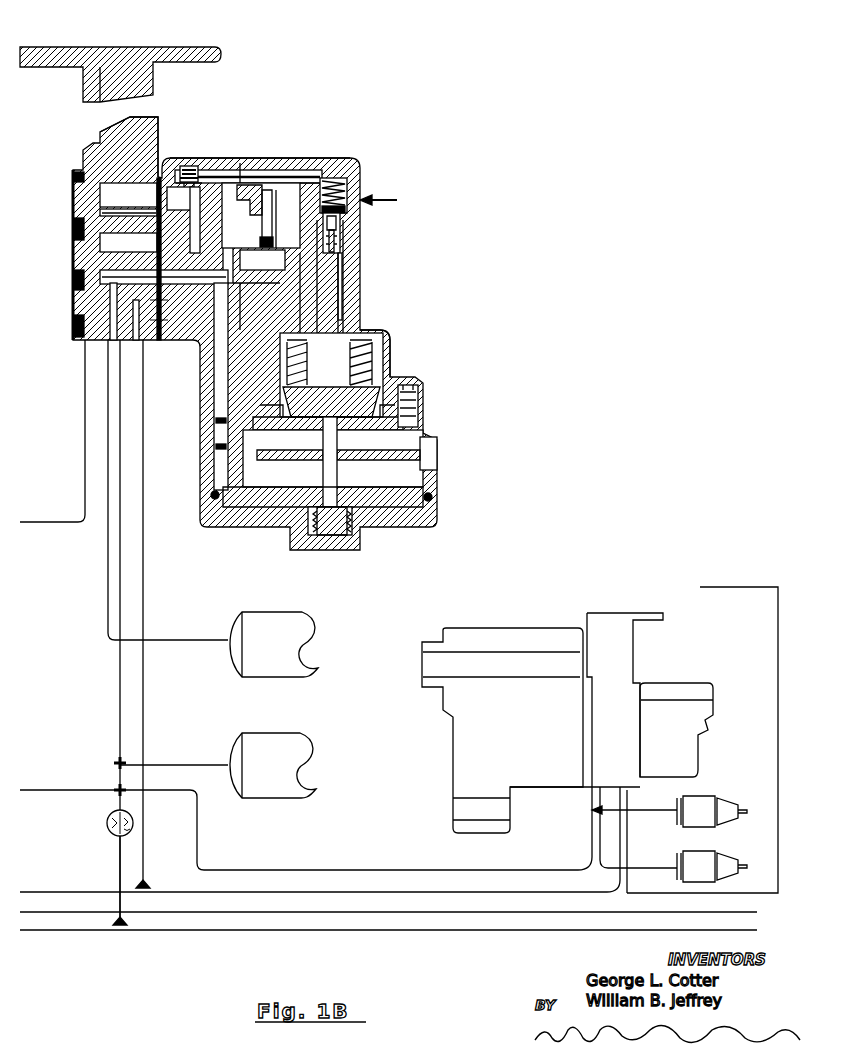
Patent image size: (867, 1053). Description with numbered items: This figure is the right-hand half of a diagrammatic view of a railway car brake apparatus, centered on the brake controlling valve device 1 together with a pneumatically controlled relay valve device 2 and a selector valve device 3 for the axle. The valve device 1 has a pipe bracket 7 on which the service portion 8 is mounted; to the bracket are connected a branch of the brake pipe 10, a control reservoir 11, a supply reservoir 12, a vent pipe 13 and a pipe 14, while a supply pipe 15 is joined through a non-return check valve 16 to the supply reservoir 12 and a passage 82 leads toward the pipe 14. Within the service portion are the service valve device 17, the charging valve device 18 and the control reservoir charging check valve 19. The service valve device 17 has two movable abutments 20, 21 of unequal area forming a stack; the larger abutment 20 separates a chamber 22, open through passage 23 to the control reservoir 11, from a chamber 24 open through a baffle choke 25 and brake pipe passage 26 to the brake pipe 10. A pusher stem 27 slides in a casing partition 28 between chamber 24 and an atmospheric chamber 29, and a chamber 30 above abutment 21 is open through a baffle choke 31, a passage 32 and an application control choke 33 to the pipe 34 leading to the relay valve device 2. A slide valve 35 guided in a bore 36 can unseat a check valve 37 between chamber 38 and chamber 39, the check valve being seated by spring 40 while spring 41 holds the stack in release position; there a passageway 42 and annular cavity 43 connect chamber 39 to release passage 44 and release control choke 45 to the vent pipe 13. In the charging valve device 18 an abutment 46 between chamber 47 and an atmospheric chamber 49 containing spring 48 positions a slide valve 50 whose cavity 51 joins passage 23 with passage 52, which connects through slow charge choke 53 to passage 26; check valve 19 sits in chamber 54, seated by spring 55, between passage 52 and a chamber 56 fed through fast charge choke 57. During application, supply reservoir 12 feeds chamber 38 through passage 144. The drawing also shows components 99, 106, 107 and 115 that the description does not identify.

The brake controlling valve device 1 is at (294, 99).
The pneumatically controlled relay valve device 2 is at (495, 629).
The selector valve device 3 is at (690, 684).
The pipe bracket 7 is at (147, 130).
The service portion 8 is at (387, 202).
The brake pipe 10 is at (68, 67).
The control reservoir 11 is at (290, 613).
The supply reservoir 12 is at (290, 733).
The vent pipe 13 is at (118, 340).
The pipe 14 is at (70, 522).
The supply pipe 15 is at (120, 852).
The non-return check valve 16 is at (107, 823).
The service valve device 17 is at (362, 281).
The charging valve device 18 is at (277, 153).
The control reservoir charging check valve 19 is at (187, 166).
The movable abutment 20 is at (437, 507).
The movable abutment 21 is at (423, 383).
The chamber 22 is at (227, 517).
The passage 23 is at (225, 372).
The chamber 24 is at (420, 463).
The baffle choke 25 is at (225, 420).
The brake pipe passage 26 is at (225, 395).
The pusher stem 27 is at (330, 473).
The casing partition 28 is at (369, 457).
The atmospheric chamber 29 is at (392, 433).
The chamber 30 is at (377, 370).
The baffle choke 31 is at (225, 446).
The passage 32 is at (180, 338).
The brake cylinder application control choke 33 is at (120, 340).
The pipe 34 is at (143, 575).
The slide valve 35 is at (333, 308).
The bore 36 is at (360, 313).
The check valve 37 is at (357, 220).
The chamber 38 is at (357, 188).
The chamber 39 is at (343, 223).
The helical bias spring 40 is at (360, 176).
The helical bias spring 41 is at (387, 340).
The passageway 42 is at (345, 267).
The annular cavity 43 is at (340, 244).
The passage 44 is at (258, 322).
The brake cylinder release control choke 45 is at (169, 310).
The movable abutment 46 is at (313, 185).
The chamber 47 is at (247, 163).
The light helical bias spring 48 is at (292, 190).
The atmospheric chamber 49 is at (334, 186).
The slide valve 50 is at (261, 215).
The annular cavity 51 is at (259, 230).
The passage 52 is at (207, 177).
The control reservoir slow charge and overcharge dissipation choke 53 is at (128, 195).
The chamber 54 is at (183, 157).
The helical bias spring 55 is at (193, 172).
The chamber 56 is at (182, 220).
The control reservoir fast charge choke 57 is at (140, 215).
The passage 82 is at (72, 228).
The conduit 99 is at (116, 788).
The nozzle 106 is at (720, 797).
The conduit 107 is at (597, 832).
The conduit 115 is at (628, 796).
The passage 144 is at (259, 302).